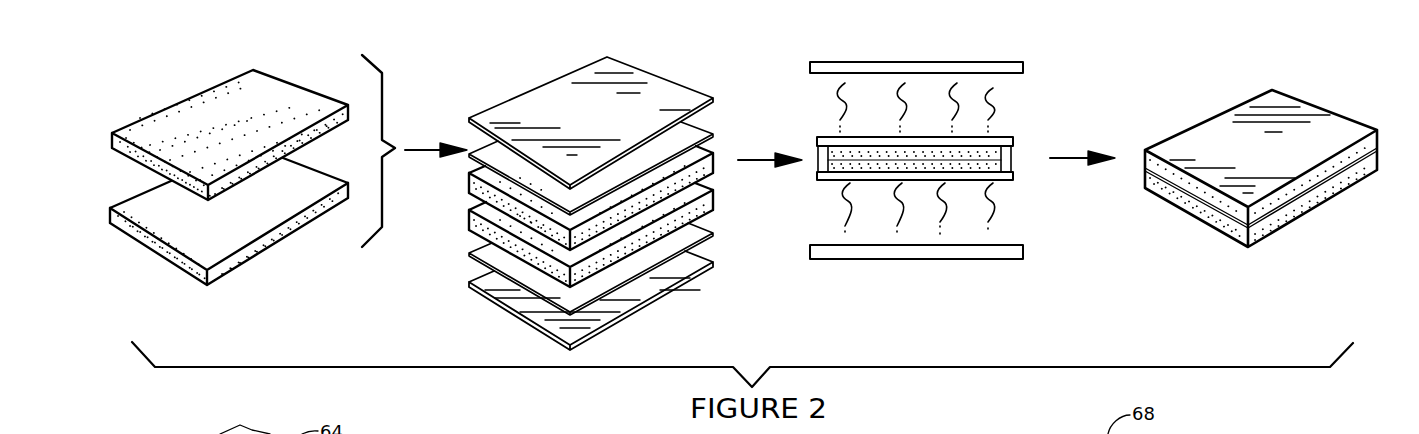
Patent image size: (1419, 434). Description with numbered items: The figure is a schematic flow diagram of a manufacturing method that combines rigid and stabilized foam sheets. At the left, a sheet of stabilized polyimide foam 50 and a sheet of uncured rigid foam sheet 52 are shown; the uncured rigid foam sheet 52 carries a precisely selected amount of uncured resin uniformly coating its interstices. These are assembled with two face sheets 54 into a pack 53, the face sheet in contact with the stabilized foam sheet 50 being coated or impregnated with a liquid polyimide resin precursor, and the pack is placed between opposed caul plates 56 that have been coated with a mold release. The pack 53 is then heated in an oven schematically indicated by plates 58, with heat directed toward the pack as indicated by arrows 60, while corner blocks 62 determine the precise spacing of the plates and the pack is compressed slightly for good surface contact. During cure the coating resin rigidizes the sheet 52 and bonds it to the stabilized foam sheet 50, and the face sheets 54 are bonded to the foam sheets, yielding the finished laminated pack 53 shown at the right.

The stabilized polyimide foam sheet 50 is at (168, 122).
The uncured rigid foam sheet 52 is at (137, 205).
The pack 53 is at (992, 176).
The face sheets 54 is at (697, 132).
The caul plates 56 is at (667, 95).
The oven plates 58 is at (1017, 75).
The heat arrows 60 is at (838, 117).
The corner blocks 62 is at (1008, 158).